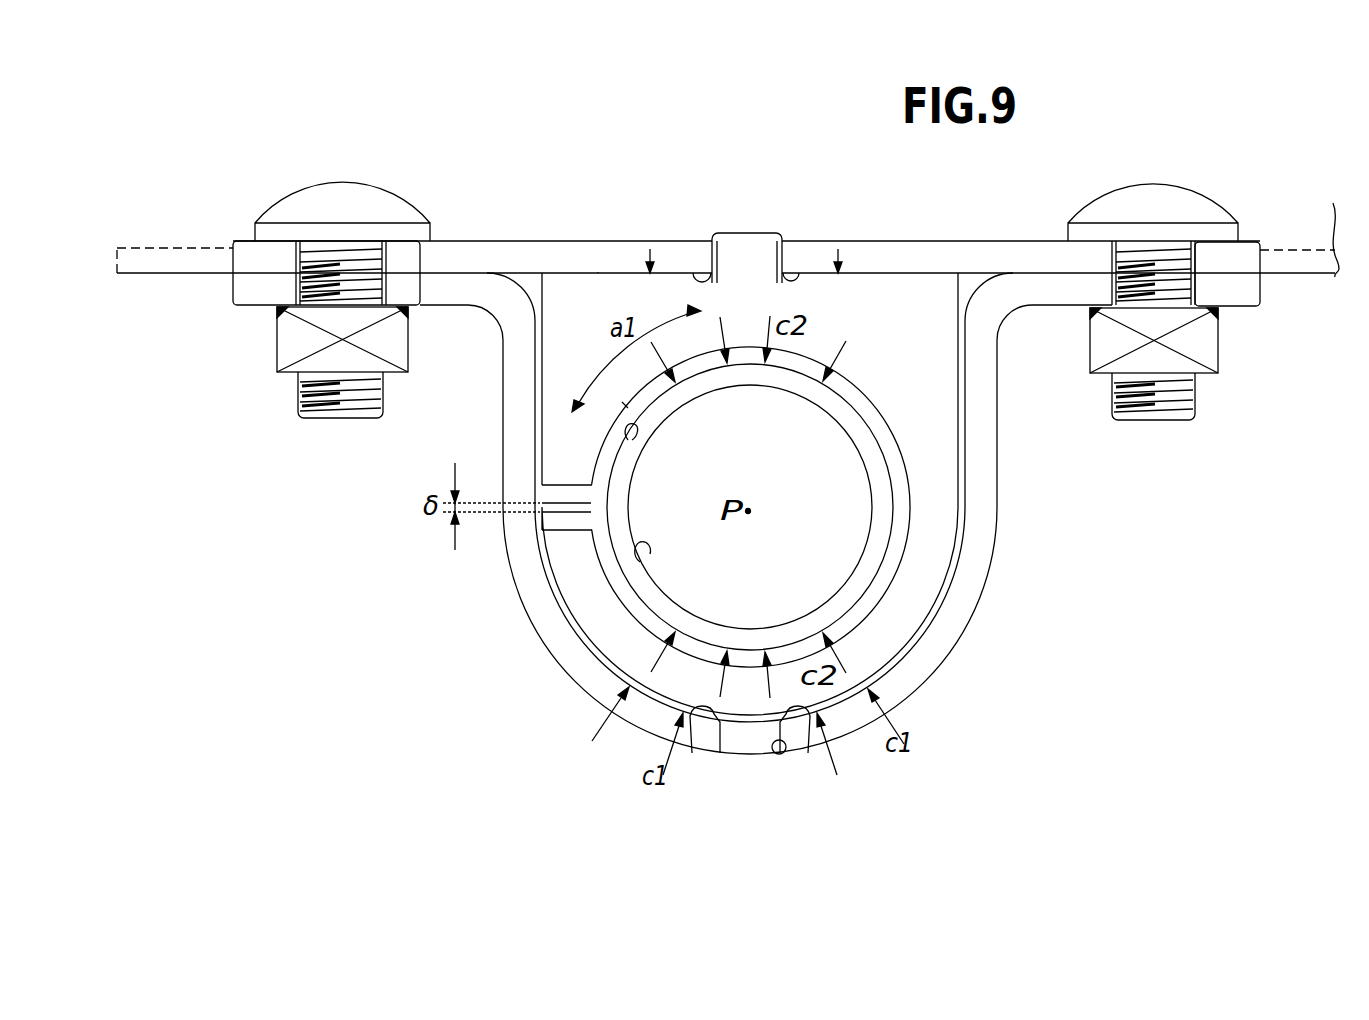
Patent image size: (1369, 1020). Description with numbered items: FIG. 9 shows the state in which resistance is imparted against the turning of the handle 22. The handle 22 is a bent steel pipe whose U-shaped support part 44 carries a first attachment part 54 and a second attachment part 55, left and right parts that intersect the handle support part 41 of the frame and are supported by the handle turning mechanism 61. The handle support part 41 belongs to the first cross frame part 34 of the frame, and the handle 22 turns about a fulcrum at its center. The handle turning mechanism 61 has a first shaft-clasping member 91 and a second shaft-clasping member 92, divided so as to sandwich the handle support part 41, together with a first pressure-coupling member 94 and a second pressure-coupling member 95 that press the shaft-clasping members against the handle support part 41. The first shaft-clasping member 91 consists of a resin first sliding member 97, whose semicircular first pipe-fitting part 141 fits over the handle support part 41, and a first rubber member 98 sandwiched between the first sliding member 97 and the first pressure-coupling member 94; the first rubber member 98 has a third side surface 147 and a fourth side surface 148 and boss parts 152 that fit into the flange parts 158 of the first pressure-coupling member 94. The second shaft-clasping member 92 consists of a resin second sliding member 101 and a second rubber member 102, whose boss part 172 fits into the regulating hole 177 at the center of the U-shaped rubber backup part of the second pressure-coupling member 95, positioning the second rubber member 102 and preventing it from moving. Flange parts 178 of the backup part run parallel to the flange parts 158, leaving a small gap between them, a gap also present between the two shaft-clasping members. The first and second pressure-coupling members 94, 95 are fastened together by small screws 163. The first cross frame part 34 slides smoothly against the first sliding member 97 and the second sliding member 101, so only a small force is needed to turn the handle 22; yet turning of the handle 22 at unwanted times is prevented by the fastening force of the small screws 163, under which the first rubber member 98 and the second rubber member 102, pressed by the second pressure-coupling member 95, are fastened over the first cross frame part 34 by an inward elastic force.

The handle 22 is at (165, 176).
The support part 44 is at (117, 273).
The first attachment part 54 is at (726, 285).
The second attachment part 55 is at (152, 275).
The handle turning mechanism 61 is at (686, 131).
The first shaft-clasping member 91 is at (598, 273).
The first pressure-coupling member 94 is at (718, 203).
The first sliding member 97 is at (625, 405).
The first rubber member 98 is at (633, 288).
The boss part 152 is at (745, 233).
The small screw 163 is at (428, 232).
The third side surface 147 is at (535, 355).
The fourth side surface 148 is at (962, 383).
The second pressure-coupling member 95 is at (513, 575).
The first pipe-fitting part 141 is at (628, 440).
The flange part 158 is at (565, 483).
The flange part 178 is at (568, 532).
The first cross frame part 34 is at (590, 536).
The handle support part 41 is at (640, 560).
The second shaft-clasping member 92 is at (609, 468).
The second sliding member 101 is at (590, 577).
The second rubber member 102 is at (637, 627).
The boss part 172 is at (735, 760).
The regulating hole 177 is at (780, 762).